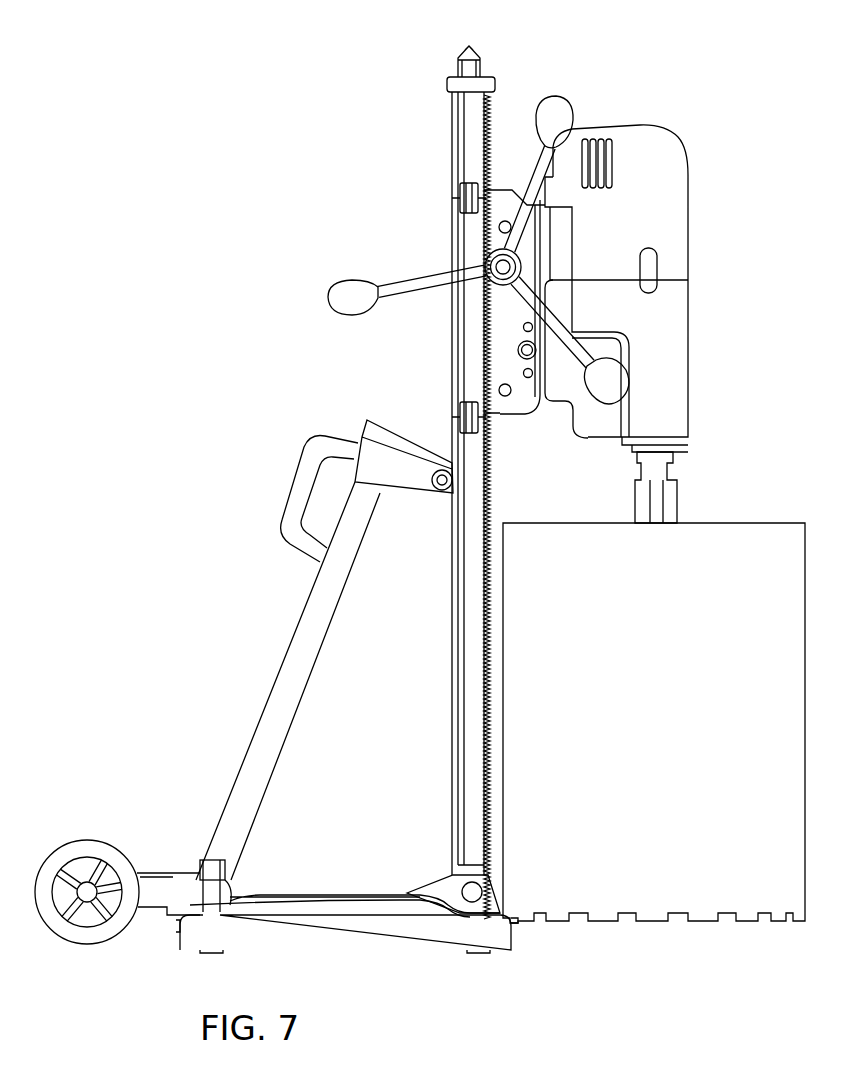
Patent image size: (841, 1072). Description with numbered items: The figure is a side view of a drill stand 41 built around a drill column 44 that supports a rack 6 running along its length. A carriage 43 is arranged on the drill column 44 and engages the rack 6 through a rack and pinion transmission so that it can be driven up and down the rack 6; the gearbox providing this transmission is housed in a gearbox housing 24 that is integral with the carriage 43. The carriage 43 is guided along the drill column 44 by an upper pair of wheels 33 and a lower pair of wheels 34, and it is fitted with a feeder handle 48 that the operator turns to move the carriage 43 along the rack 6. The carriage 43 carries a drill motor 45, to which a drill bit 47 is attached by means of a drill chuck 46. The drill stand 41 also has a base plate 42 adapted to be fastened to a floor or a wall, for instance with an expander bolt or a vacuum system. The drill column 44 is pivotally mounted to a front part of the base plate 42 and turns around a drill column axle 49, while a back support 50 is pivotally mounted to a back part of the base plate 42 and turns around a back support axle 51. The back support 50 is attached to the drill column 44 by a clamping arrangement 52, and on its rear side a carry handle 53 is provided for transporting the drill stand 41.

The rack 6 is at (511, 103).
The gearbox housing 24 is at (489, 193).
The upper pair of wheels 33 is at (468, 197).
The lower pair of wheels 34 is at (468, 411).
The drill stand 41 is at (288, 325).
The base plate 42 is at (358, 935).
The carriage 43 is at (545, 403).
The drill column 44 is at (432, 70).
The drill motor 45 is at (650, 160).
The drill chuck 46 is at (682, 470).
The drill bit 47 is at (760, 556).
The feeder handle 48 is at (405, 278).
The drill column axle 49 is at (466, 886).
The back support 50 is at (290, 680).
The back support axle 51 is at (228, 886).
The clamping arrangement 52 is at (400, 480).
The carry handle 53 is at (303, 486).